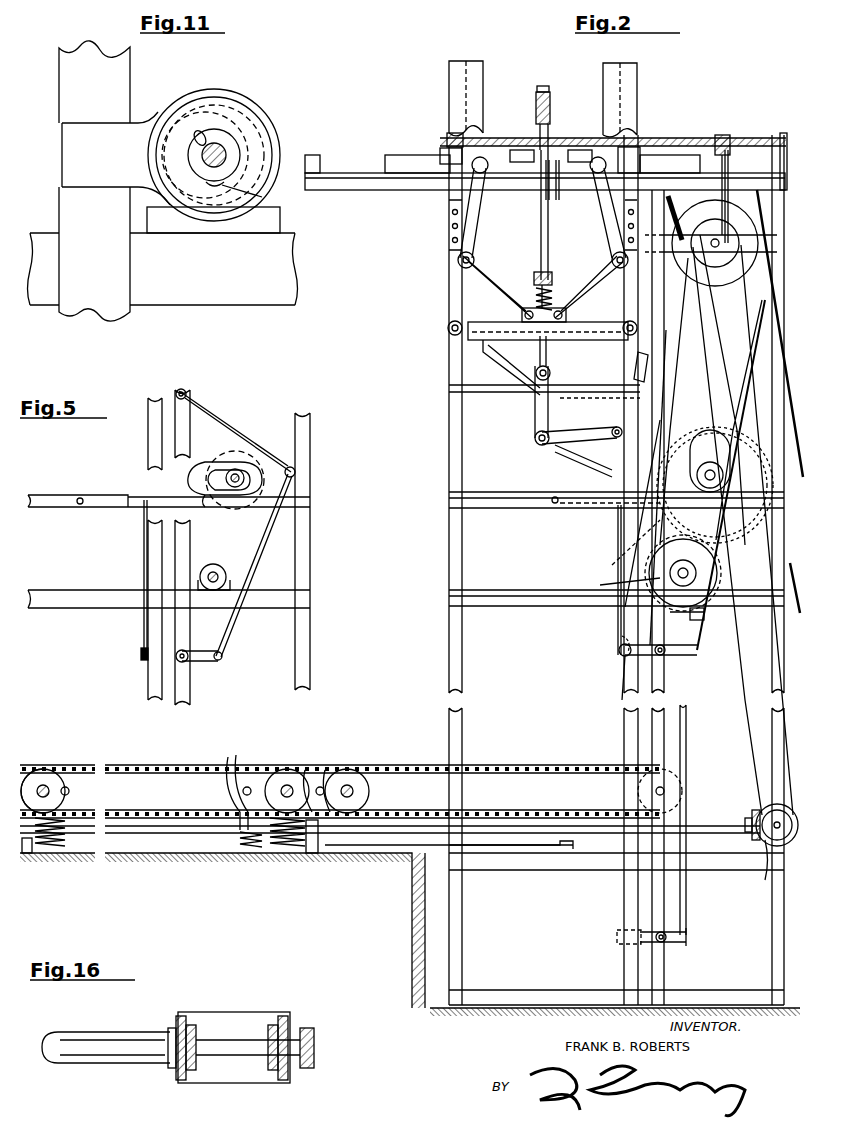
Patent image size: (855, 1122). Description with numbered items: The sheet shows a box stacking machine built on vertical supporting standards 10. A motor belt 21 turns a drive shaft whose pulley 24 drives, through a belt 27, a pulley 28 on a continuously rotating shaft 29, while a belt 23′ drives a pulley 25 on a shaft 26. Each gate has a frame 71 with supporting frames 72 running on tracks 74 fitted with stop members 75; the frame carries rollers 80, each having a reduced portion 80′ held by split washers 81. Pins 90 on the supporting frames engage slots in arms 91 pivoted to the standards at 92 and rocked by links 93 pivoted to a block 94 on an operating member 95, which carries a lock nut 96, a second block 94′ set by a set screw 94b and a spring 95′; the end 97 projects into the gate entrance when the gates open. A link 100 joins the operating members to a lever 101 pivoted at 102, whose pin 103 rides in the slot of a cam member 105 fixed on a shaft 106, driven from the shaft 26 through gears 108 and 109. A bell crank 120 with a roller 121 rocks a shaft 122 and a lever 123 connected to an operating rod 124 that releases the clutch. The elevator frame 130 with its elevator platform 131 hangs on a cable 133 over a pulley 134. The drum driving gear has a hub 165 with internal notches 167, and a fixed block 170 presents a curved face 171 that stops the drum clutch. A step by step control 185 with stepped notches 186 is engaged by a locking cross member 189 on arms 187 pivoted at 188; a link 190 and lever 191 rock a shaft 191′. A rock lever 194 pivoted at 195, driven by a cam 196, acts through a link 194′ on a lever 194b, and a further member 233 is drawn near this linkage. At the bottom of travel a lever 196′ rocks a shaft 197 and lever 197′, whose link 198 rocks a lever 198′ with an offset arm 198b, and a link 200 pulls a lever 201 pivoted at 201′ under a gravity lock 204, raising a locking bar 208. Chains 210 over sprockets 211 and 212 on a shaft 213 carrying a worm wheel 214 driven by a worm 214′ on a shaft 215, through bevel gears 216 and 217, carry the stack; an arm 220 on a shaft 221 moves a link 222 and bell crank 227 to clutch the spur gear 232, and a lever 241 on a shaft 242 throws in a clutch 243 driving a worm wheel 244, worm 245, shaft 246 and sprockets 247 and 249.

In FIG. 2, the vertical supporting standards 10 is at (449, 436).
In FIG. 2, the belt 21 is at (788, 386).
In FIG. 2, the belt 23′ is at (735, 345).
In FIG. 2, the pulley 24 is at (728, 240).
In FIG. 2, the pulley 25 is at (622, 583).
In FIG. 5, the shaft 26 is at (214, 574).
In FIG. 2, the shaft 26 is at (700, 573).
In FIG. 2, the belt 27 is at (748, 740).
In FIG. 2, the pulley 28 is at (762, 810).
In FIG. 2, the shaft 29 is at (750, 834).
In FIG. 2, the frame 71 is at (440, 150).
In FIG. 16, the frame 71 is at (182, 1016).
In FIG. 2, the supporting frames 72 is at (388, 158).
In FIG. 2, the tracks 74 is at (333, 186).
In FIG. 2, the stop members 75 is at (313, 156).
In FIG. 2, the rollers 80 is at (522, 150).
In FIG. 16, the rollers 80 is at (112, 1040).
In FIG. 16, the reduced portion 80′ is at (217, 1057).
In FIG. 16, the split washers 81 is at (273, 1024).
In FIG. 2, the pins 90 is at (485, 158).
In FIG. 2, the arms 91 is at (478, 205).
In FIG. 2, the pivot 92 is at (448, 332).
In FIG. 2, the links 93 is at (503, 282).
In FIG. 2, the block 94 is at (556, 308).
In FIG. 2, the second block 94′ is at (537, 272).
In FIG. 2, the set screw 94b is at (552, 290).
In FIG. 2, the operating members 95 is at (540, 228).
In FIG. 2, the spring 95′ is at (536, 293).
In FIG. 2, the lock nut 96 is at (538, 346).
In FIG. 2, the end 97 is at (546, 180).
In FIG. 2, the link 100 is at (535, 417).
In FIG. 2, the lever 101 is at (560, 445).
In FIG. 2, the pivot 102 is at (614, 427).
In FIG. 2, the pin 103 is at (745, 420).
In FIG. 5, the cam member 105 is at (188, 480).
In FIG. 2, the cam member 105 is at (722, 441).
In FIG. 11, the shaft 106 is at (220, 150).
In FIG. 5, the shaft 106 is at (237, 470).
In FIG. 2, the shaft 106 is at (724, 477).
In FIG. 2, the gear 108 is at (692, 624).
In FIG. 2, the gear 109 is at (738, 546).
In FIG. 2, the bell crank 120 is at (549, 100).
In FIG. 2, the roller 121 is at (540, 88).
In FIG. 2, the shaft 122 is at (660, 147).
In FIG. 2, the lever 123 is at (723, 134).
In FIG. 2, the operating rod 124 is at (729, 203).
In FIG. 2, the frame 130 is at (484, 348).
In FIG. 2, the elevator platform 131 is at (490, 322).
In FIG. 2, the cable 133 is at (636, 224).
In FIG. 2, the pulley 134 is at (664, 199).
In FIG. 11, the hub 165 is at (238, 133).
In FIG. 11, the internal notches 167 is at (252, 191).
In FIG. 11, the fixed block 170 is at (165, 104).
In FIG. 11, the curved face 171 is at (205, 134).
In FIG. 5, the step by step control 185 is at (230, 512).
In FIG. 5, the stepped notches 186 is at (205, 508).
In FIG. 5, the arms 187 is at (205, 410).
In FIG. 2, the arms 187 is at (663, 410).
In FIG. 5, the pivot 188 is at (187, 393).
In FIG. 5, the locking cross member 189 is at (266, 450).
In FIG. 5, the link 190 is at (254, 575).
In FIG. 2, the link 190 is at (700, 652).
In FIG. 5, the lever 191 is at (222, 657).
In FIG. 2, the lever 191 is at (680, 650).
In FIG. 5, the shaft 191′ is at (188, 663).
In FIG. 2, the shaft 191′ is at (664, 660).
In FIG. 5, the rock lever 194 is at (130, 498).
In FIG. 2, the rock lever 194 is at (582, 510).
In FIG. 5, the link 194′ is at (143, 530).
In FIG. 2, the link 194′ is at (617, 563).
In FIG. 5, the lever 194b is at (141, 654).
In FIG. 2, the lever 194b is at (619, 655).
In FIG. 5, the pivot 195 is at (80, 498).
In FIG. 2, the pivot 195 is at (553, 506).
In FIG. 5, the cam 196 is at (218, 468).
In FIG. 2, the lever 196′ is at (616, 942).
In FIG. 2, the shaft 197 is at (662, 944).
In FIG. 2, the lever 197′ is at (680, 935).
In FIG. 2, the link 198 is at (687, 728).
In FIG. 2, the lever 198′ is at (624, 668).
In FIG. 2, the offset arm 198b is at (622, 637).
In FIG. 2, the link 200 is at (612, 548).
In FIG. 2, the lever 201 is at (500, 392).
In FIG. 2, the pivot 201′ is at (615, 398).
In FIG. 2, the gravity lock 204 is at (636, 370).
In FIG. 2, the locking bar 208 is at (558, 183).
In FIG. 2, the chains 210 is at (506, 770).
In FIG. 2, the sprocket 211 is at (313, 775).
In FIG. 2, the sprocket 212 is at (640, 784).
In FIG. 2, the shaft 213 is at (243, 789).
In FIG. 2, the worm wheel 214 is at (355, 805).
In FIG. 2, the worm 214′ is at (283, 848).
In FIG. 2, the shaft 215 is at (518, 806).
In FIG. 2, the bevel gear 216 is at (752, 818).
In FIG. 2, the second bevel gear 217 is at (766, 865).
In FIG. 2, the arm 220 is at (290, 783).
In FIG. 2, the shaft 221 is at (328, 775).
In FIG. 2, the link 222 is at (345, 836).
In FIG. 2, the bell crank 227 is at (522, 837).
In FIG. 2, the spur gear 232 is at (700, 612).
In FIG. 2, the rod 233 is at (648, 518).
In FIG. 2, the lever 241 is at (240, 758).
In FIG. 2, the shaft 242 is at (238, 800).
In FIG. 2, the clutch 243 is at (255, 850).
In FIG. 2, the worm wheel 244 is at (48, 845).
In FIG. 2, the worm 245 is at (70, 792).
In FIG. 2, the shaft 246 is at (45, 785).
In FIG. 2, the sprockets 247 is at (32, 778).
In FIG. 2, the sprockets 249 is at (352, 775).